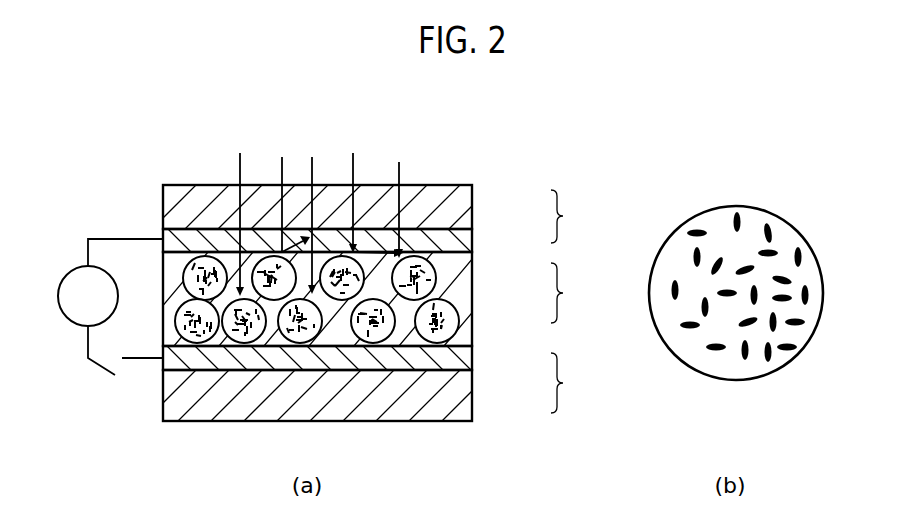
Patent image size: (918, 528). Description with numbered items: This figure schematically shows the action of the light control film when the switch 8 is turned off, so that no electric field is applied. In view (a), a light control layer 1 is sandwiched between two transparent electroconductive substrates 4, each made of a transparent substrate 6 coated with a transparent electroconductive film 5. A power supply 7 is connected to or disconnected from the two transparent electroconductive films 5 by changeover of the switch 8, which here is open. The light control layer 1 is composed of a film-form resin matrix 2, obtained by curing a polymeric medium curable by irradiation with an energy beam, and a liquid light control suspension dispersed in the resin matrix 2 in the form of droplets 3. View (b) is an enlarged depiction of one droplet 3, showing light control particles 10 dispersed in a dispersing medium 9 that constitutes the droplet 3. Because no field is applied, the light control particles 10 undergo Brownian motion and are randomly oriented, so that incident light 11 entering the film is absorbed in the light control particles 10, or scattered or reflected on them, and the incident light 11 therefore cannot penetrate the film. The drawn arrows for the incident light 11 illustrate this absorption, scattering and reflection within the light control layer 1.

The light control layer 1 is at (568, 293).
The resin matrix 2 is at (472, 284).
The droplets 3 is at (455, 332).
The transparent electroconductive substrate 4 is at (568, 301).
The transparent electroconductive film 5 is at (472, 243).
The transparent substrate 6 is at (472, 202).
The power supply 7 is at (68, 275).
The switch 8 is at (100, 372).
The dispersing medium 9 is at (775, 228).
The light control particles 10 is at (800, 322).
The incident light 11 is at (399, 167).